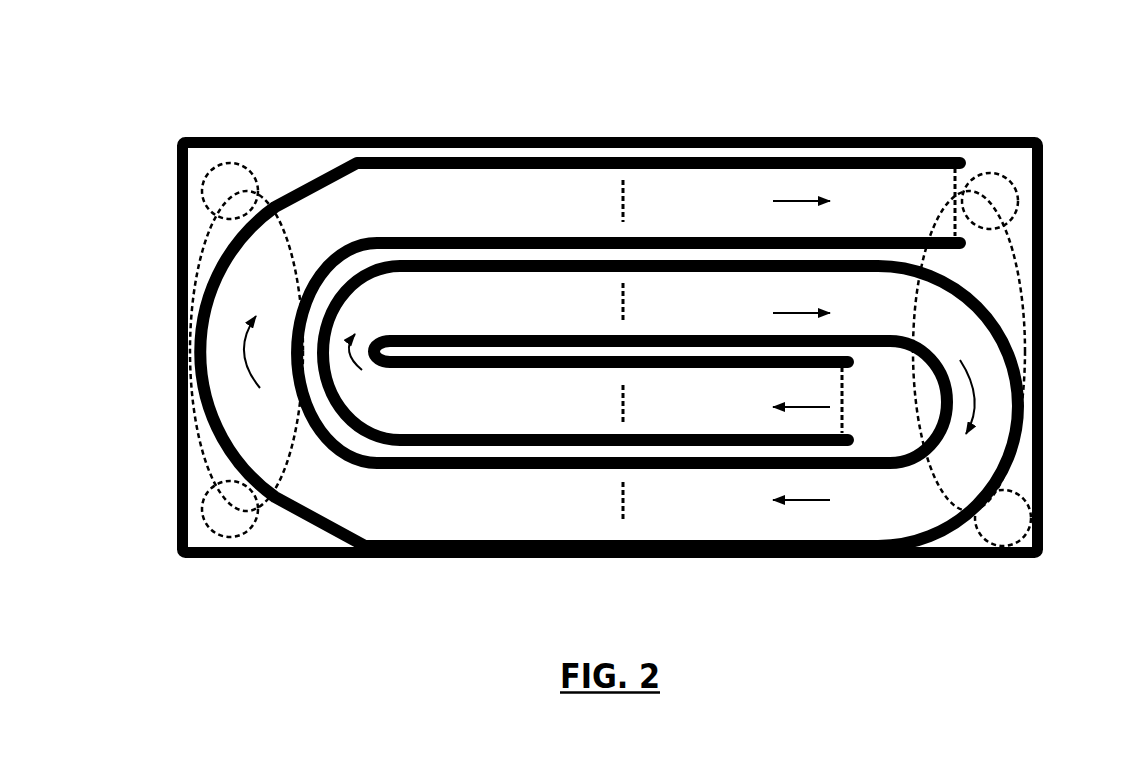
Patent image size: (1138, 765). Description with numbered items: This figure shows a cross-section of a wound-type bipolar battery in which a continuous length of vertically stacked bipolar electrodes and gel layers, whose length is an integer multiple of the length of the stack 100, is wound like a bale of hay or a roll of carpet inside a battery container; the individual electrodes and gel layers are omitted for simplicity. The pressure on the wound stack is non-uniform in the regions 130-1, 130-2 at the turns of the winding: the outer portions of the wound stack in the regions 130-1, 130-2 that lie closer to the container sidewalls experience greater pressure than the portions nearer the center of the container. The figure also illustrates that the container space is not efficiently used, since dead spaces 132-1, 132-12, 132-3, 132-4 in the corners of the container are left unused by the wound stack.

The stack 100 is at (550, 237).
The region 130-1 is at (207, 240).
The region 130-2 is at (1020, 242).
The dead space 132-1 is at (249, 172).
The second fluid port 132-12 is at (1005, 178).
The dead space 132-3 is at (1020, 496).
The dead space 132-4 is at (205, 500).